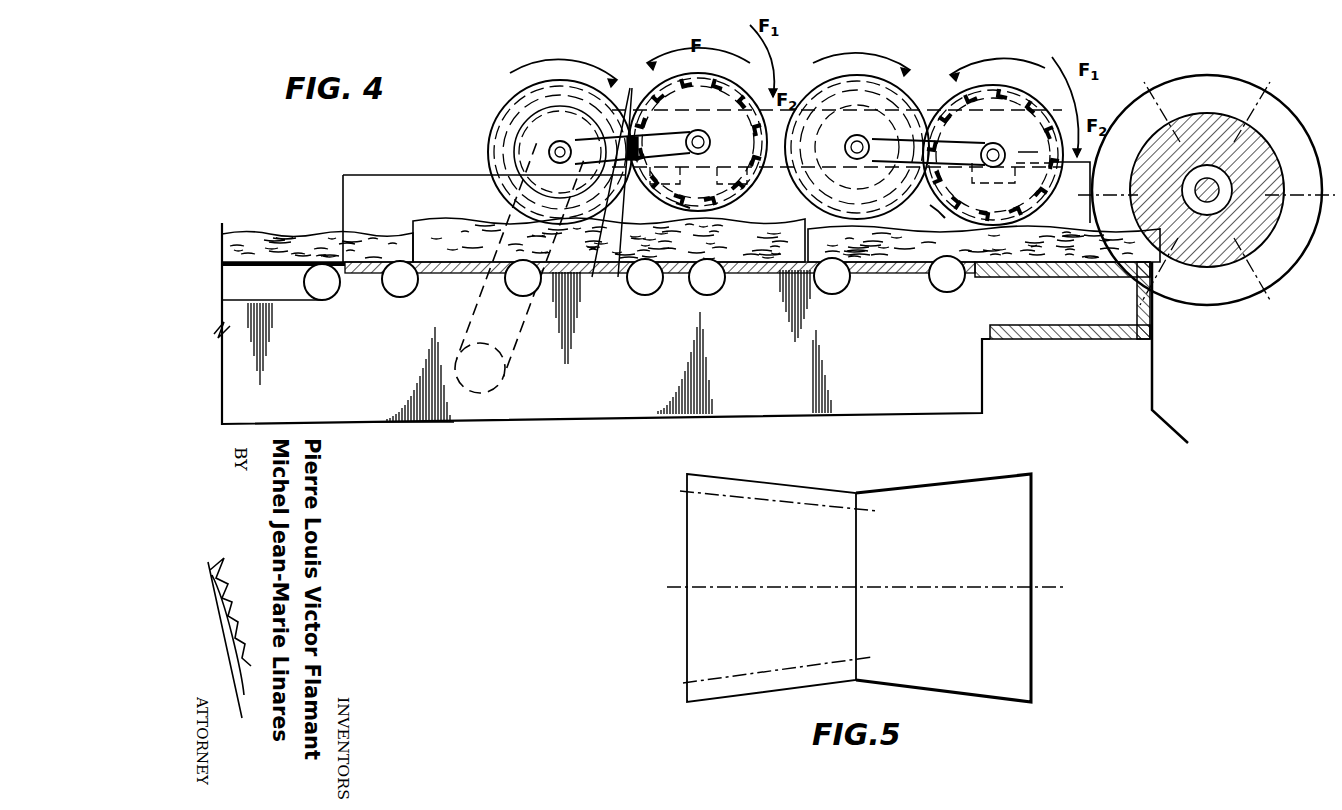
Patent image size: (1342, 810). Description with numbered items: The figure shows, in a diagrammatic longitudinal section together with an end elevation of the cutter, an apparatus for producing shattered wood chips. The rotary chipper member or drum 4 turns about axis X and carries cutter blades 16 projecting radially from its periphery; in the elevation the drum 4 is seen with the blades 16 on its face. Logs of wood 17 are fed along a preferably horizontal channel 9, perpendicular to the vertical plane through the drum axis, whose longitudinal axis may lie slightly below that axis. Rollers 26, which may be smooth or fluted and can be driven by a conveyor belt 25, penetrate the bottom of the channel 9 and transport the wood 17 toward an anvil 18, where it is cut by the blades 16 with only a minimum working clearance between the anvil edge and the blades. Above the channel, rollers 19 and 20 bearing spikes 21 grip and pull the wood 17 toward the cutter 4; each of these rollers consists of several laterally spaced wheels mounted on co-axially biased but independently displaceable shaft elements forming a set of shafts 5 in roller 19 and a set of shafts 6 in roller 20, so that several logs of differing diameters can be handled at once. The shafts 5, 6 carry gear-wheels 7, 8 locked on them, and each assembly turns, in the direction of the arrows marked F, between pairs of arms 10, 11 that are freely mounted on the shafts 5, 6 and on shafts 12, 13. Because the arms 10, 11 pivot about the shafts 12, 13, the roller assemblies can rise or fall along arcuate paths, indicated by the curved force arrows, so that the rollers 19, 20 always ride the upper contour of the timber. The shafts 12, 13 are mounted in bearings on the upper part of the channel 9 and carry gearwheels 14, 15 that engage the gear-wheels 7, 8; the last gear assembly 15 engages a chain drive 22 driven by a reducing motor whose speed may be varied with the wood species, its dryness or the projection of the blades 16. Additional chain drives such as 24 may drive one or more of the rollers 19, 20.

In FIG. 4, the rotary chipper member or drum 4 is at (1273, 268).
In FIG. 5, the rotary chipper member or drum 4 is at (992, 545).
In FIG. 4, the set of shafts 5 is at (993, 150).
In FIG. 4, the set of shafts 6 is at (712, 142).
In FIG. 4, the gear-wheel 7 is at (936, 200).
In FIG. 4, the gear-wheel 8 is at (628, 162).
In FIG. 4, the feed channel 9 is at (413, 186).
In FIG. 4, the arm 10 is at (903, 148).
In FIG. 4, the arm 11 is at (619, 170).
In FIG. 4, the shaft 12 is at (857, 141).
In FIG. 4, the shaft 13 is at (551, 156).
In FIG. 4, the gearwheel 14 is at (857, 134).
In FIG. 4, the gearwheel 15 is at (521, 108).
In FIG. 4, the cutter blades 16 is at (1244, 104).
In FIG. 5, the cutter blades 16 is at (770, 503).
In FIG. 4, the logs of wood 17 is at (280, 250).
In FIG. 4, the anvil 18 is at (1153, 280).
In FIG. 4, the roller 19 is at (1031, 141).
In FIG. 4, the roller 20 is at (676, 203).
In FIG. 4, the spikes 21 is at (750, 190).
In FIG. 4, the chain drive 22 is at (514, 141).
In FIG. 4, the chain drive 24 is at (546, 130).
In FIG. 4, the conveyor belt 25 is at (316, 288).
In FIG. 4, the rollers 26 is at (404, 287).